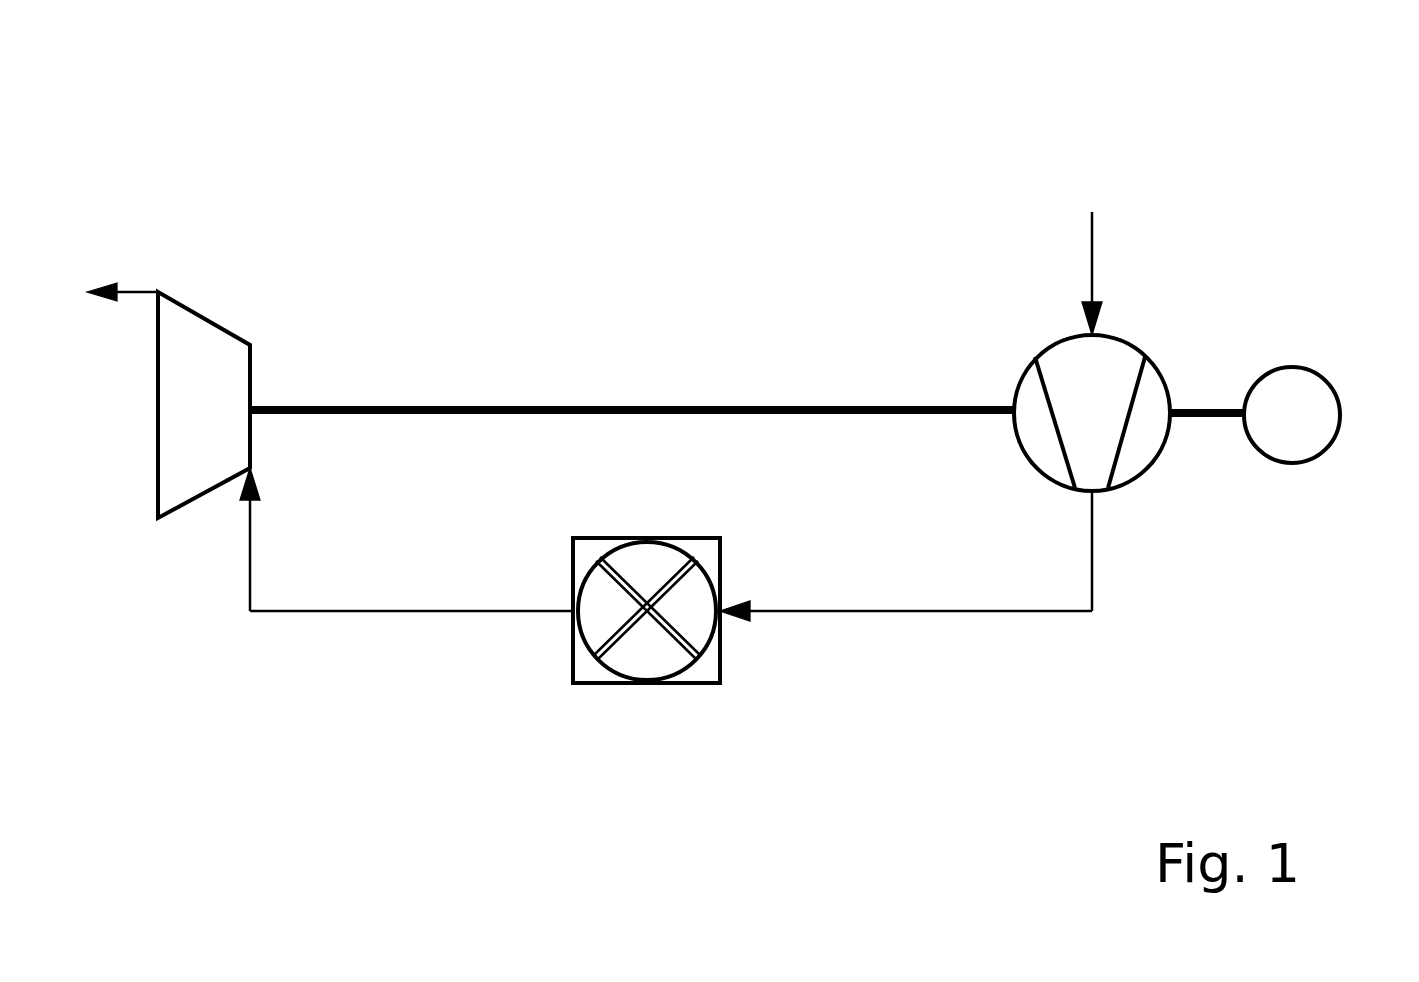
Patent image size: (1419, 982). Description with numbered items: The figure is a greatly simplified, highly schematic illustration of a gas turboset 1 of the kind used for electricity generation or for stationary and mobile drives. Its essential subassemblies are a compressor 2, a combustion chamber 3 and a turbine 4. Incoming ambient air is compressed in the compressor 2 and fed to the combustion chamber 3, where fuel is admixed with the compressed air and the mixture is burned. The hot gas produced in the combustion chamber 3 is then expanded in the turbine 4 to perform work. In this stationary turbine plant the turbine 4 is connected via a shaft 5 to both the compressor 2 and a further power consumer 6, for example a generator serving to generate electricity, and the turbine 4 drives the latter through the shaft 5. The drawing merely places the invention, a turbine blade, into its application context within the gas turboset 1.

The gas turboset 1 is at (226, 118).
The compressor 2 is at (1147, 473).
The combustion chamber 3 is at (655, 683).
The turbine 4 is at (237, 335).
The shaft 5 is at (635, 405).
The further power consumer 6 is at (1338, 420).